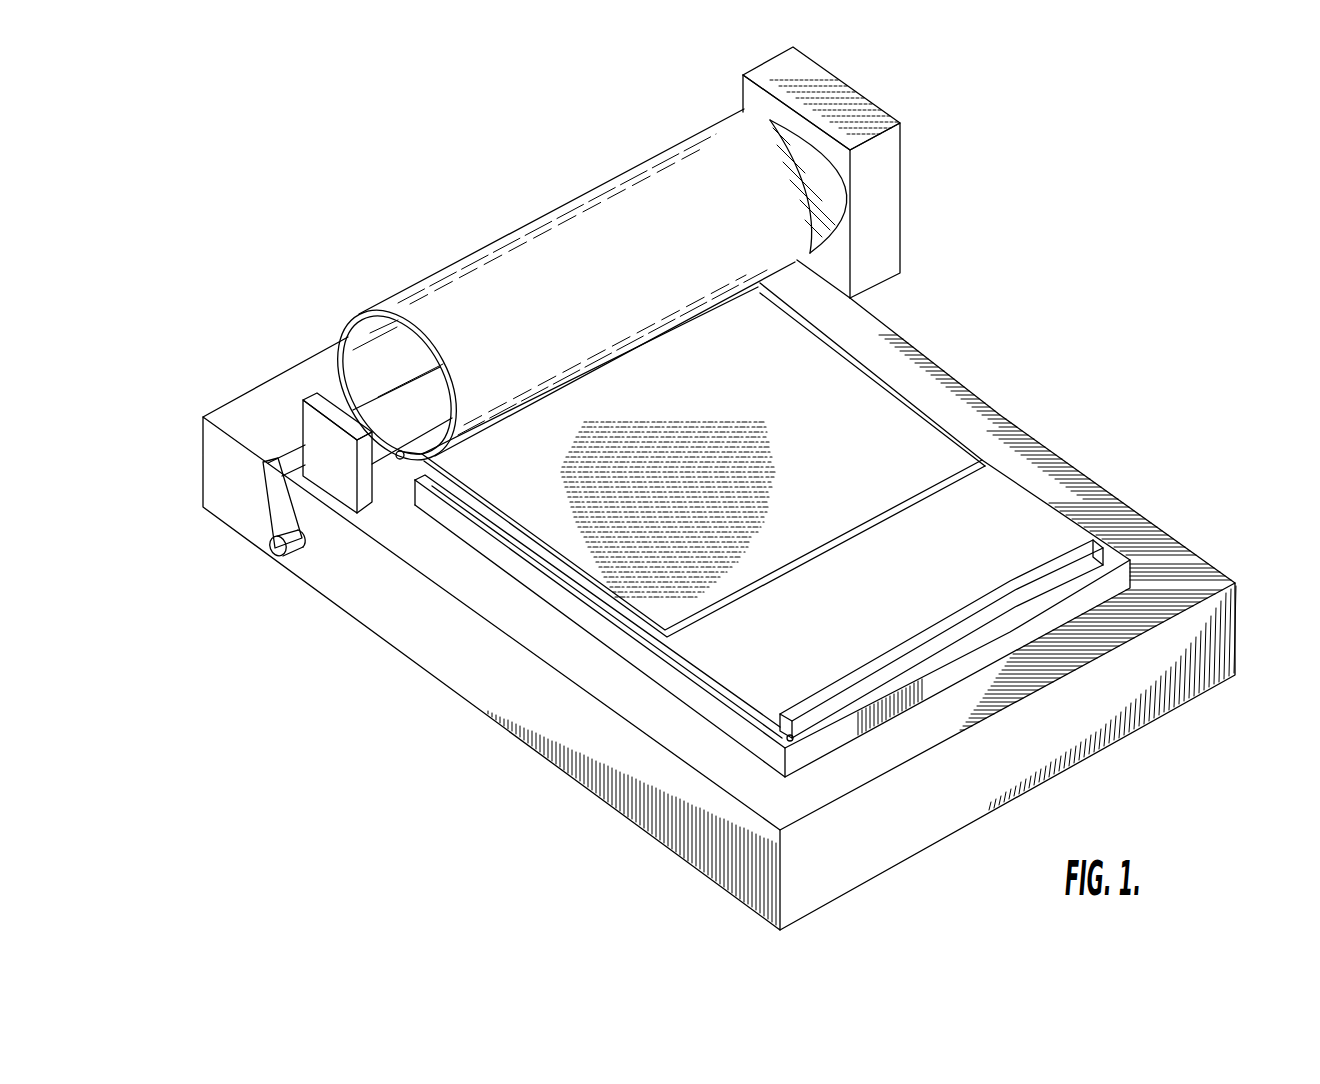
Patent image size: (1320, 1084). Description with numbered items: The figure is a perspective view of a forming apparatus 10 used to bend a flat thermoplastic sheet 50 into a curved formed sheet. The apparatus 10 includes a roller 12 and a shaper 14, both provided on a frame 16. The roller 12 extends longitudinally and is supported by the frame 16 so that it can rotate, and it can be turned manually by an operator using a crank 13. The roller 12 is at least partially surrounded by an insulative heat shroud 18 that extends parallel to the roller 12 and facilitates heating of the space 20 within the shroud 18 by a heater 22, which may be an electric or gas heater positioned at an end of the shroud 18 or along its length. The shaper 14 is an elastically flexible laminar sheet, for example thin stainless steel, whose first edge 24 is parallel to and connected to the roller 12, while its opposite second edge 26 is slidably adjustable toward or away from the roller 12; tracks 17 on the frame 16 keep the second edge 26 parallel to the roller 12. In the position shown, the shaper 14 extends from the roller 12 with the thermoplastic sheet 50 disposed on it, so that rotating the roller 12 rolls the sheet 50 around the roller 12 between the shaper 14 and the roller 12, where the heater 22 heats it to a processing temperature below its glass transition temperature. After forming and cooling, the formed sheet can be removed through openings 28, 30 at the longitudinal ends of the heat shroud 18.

The forming apparatus 10 is at (1143, 188).
The roller 12 is at (358, 363).
The crank 13 is at (266, 506).
The shaper 14 is at (713, 663).
The frame 16 is at (1113, 490).
The tracks 17 is at (750, 716).
The insulative heat shroud 18 is at (542, 212).
The space 20 is at (342, 357).
The heater 22 is at (842, 80).
The first edge 24 is at (397, 460).
The second edge 26 is at (858, 683).
The opening 28 is at (346, 332).
The opening 30 is at (743, 108).
The thermoplastic sheet 50 is at (838, 383).